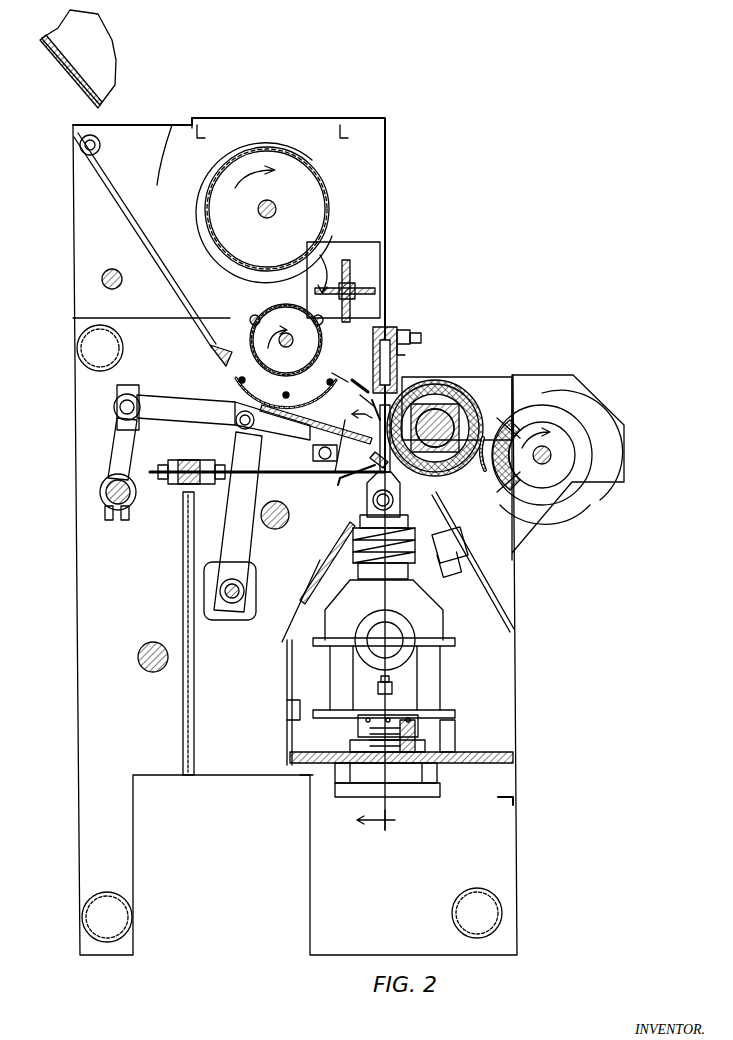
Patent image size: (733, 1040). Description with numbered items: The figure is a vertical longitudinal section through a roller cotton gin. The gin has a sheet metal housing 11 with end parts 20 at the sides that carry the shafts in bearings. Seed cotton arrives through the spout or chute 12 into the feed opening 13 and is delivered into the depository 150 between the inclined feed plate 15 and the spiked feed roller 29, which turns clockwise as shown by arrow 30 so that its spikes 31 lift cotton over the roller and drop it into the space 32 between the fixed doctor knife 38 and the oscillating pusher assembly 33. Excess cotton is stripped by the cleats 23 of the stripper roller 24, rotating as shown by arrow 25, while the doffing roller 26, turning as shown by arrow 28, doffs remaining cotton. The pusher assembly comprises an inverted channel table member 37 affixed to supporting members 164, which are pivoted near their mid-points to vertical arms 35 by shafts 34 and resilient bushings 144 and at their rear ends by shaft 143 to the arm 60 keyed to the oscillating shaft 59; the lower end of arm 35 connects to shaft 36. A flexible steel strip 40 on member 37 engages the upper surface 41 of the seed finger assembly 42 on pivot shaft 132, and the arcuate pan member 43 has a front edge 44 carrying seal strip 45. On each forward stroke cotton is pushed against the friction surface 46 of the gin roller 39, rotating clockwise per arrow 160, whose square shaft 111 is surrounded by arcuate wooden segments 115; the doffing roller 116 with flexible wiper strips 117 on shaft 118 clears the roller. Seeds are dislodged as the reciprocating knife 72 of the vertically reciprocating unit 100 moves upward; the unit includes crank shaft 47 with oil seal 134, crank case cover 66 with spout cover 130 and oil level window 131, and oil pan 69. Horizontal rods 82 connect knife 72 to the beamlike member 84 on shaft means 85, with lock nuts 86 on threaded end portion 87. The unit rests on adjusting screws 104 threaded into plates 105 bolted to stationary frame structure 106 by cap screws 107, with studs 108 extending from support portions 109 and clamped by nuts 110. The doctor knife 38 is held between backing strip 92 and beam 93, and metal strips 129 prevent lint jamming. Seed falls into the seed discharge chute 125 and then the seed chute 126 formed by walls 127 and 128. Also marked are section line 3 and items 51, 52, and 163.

The sheet metal housing 11 is at (73, 515).
The spout or chute 12 is at (113, 52).
The feed opening 13 is at (113, 135).
The inclined feed plate 15 is at (127, 226).
The end parts 20 is at (113, 597).
The cleats 23 is at (330, 212).
The stripper roller 24 is at (218, 258).
The arrow 25 is at (255, 181).
The doffing roller 26 is at (349, 262).
The arrow 28 is at (328, 266).
The spiked feed roller 29 is at (300, 308).
The arrow 30 is at (274, 340).
The spikes 31 is at (250, 315).
The space 32 is at (352, 335).
The oscillating pusher assembly 33 is at (370, 410).
The shafts 34 is at (286, 440).
The vertical arms 35 is at (254, 512).
The shaft 36 is at (240, 588).
The inverted channel table member 37 is at (322, 388).
The doctor knife 38 is at (405, 365).
The gin roller 39 is at (455, 388).
The flexible steel strip 40 is at (370, 452).
The upper surface 41 is at (318, 432).
The seed finger assembly 42 is at (313, 452).
The arcuate pan member 43 is at (272, 386).
The front edge 44 is at (350, 380).
The seal strip 45 is at (360, 395).
The friction surface 46 is at (470, 378).
The crank shaft 47 is at (402, 632).
The shaft 51 is at (138, 650).
The shaft 52 is at (280, 529).
The oscillating shaft 59 is at (110, 478).
The arm 60 is at (115, 440).
The crank case cover 66 is at (368, 606).
The oil pan 69 is at (335, 715).
The reciprocating knife 72 is at (392, 470).
The horizontal rods 82 is at (300, 476).
The beamlike member 84 is at (176, 484).
The shaft means 85 is at (192, 460).
The lock nuts 86 is at (162, 465).
The threaded end portion 87 is at (196, 482).
The backing strip 92 is at (400, 322).
The beam 93 is at (415, 340).
The vertically reciprocating unit 100 is at (446, 540).
The adjusting screws 104 is at (418, 728).
The plates 105 is at (350, 746).
The stationary frame structure 106 is at (465, 765).
The bolts or cap screws 107 is at (370, 735).
The studs 108 is at (395, 790).
The support portions 109 is at (443, 795).
The nuts 110 is at (395, 690).
The square shaft 111 is at (480, 468).
The arcuate wooden segments 115 is at (455, 405).
The doffing roller 116 is at (540, 407).
The flexible wiper strips 117 is at (515, 420).
The shaft 118 is at (543, 464).
The seed discharge chute 125 is at (340, 482).
The seed chute 126 is at (240, 770).
The wall 127 is at (298, 622).
The wall 128 is at (183, 728).
The metal strips 129 is at (376, 368).
The spout cover 130 is at (455, 585).
The oil level window 131 is at (452, 740).
The pivot shaft 132 is at (338, 468).
The oil seal 134 is at (367, 628).
The shaft 143 is at (118, 392).
The resilient bushings 144 is at (116, 404).
The depository 150 is at (162, 125).
The arrow 160 is at (446, 370).
The shaft 163 is at (396, 618).
The supporting members 164 is at (182, 395).
The section line 3 is at (373, 621).